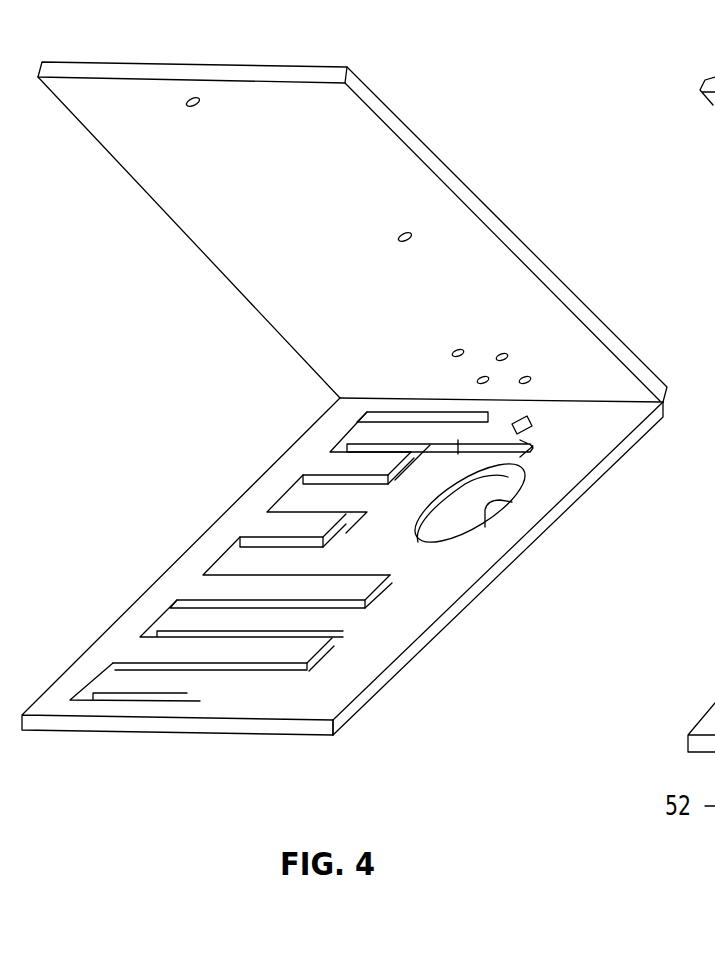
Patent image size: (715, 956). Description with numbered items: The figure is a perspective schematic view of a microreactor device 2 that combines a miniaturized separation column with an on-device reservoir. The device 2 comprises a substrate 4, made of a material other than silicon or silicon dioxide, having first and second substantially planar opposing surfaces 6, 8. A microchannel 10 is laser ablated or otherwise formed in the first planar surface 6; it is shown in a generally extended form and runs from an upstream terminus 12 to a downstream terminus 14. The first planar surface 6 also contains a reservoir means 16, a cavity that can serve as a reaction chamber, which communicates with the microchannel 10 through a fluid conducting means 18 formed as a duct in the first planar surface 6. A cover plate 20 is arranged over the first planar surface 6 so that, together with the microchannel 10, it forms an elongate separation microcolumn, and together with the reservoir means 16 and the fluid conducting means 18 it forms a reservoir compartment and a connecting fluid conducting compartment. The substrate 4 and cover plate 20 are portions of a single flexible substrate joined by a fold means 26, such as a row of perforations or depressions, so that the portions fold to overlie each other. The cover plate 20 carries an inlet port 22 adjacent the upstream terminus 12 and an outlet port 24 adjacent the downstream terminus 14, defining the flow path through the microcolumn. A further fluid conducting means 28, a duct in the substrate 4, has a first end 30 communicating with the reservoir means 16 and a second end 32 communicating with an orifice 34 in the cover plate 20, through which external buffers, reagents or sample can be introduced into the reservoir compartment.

The microreactor device 2 is at (182, 386).
The substrate 4 is at (133, 727).
The first planar surface 6 is at (611, 422).
The second planar surface 8 is at (575, 502).
The microchannel 10 is at (287, 492).
The upstream terminus 12 is at (480, 403).
The downstream terminus 14 is at (187, 693).
The reservoir means 16 is at (515, 508).
The fluid conducting means 18 is at (432, 549).
The cover plate 20 is at (340, 135).
The inlet port 22 is at (484, 377).
The outlet port 24 is at (198, 101).
The fold means 26 is at (613, 402).
The fluid conducting means 28 is at (530, 442).
The first end 30 is at (523, 465).
The second end 32 is at (457, 443).
The orifice 34 is at (460, 351).